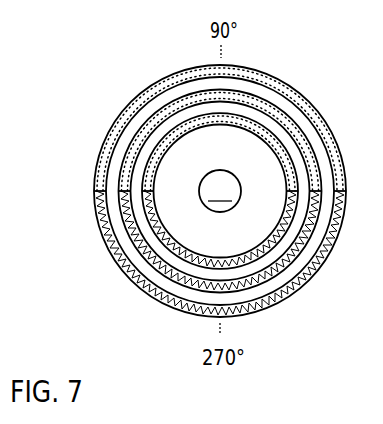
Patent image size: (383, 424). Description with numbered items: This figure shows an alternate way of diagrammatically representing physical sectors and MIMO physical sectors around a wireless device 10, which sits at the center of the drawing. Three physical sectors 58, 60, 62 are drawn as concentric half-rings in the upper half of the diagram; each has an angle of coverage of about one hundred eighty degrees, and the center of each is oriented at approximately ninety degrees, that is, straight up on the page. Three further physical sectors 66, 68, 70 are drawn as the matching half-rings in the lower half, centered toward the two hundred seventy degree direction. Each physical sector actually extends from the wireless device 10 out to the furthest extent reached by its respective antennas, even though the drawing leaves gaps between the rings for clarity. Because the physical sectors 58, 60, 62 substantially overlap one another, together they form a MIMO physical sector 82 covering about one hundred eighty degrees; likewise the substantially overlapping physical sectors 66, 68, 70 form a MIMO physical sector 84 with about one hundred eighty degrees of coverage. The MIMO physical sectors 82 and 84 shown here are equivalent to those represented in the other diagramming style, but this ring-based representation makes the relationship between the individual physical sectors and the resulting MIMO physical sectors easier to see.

The wireless device 10 is at (220, 191).
The physical sector 58 is at (143, 181).
The physical sector 60 is at (122, 158).
The physical sector 62 is at (118, 128).
The physical sector 66 is at (144, 207).
The physical sector 68 is at (122, 229).
The physical sector 70 is at (115, 255).
The MIMO physical sector 82 is at (308, 79).
The MIMO physical sector 84 is at (143, 321).